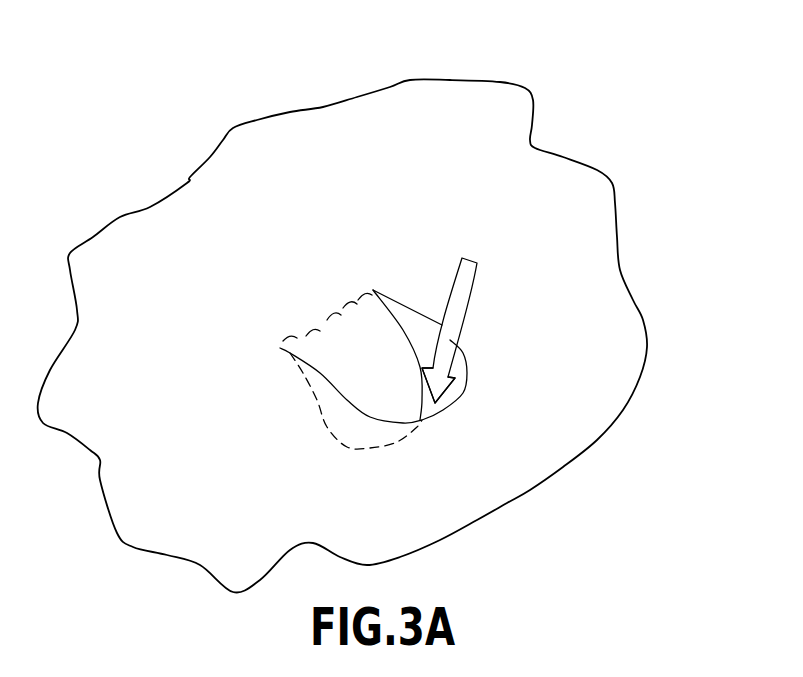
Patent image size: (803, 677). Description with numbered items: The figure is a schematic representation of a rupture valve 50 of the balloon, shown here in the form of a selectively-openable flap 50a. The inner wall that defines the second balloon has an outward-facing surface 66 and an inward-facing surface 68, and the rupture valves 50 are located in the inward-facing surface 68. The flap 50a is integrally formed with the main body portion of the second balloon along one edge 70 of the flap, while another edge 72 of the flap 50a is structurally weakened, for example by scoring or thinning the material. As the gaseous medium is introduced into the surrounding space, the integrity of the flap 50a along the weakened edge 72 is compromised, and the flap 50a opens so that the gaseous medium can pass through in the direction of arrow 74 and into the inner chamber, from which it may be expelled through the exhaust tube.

The rupture valve 50 is at (430, 425).
The flap 50a is at (373, 350).
The outward-facing surface 66 is at (160, 252).
The inward-facing surface 68 is at (200, 497).
The edge of the flap 70 is at (320, 318).
The structurally weakened edge 72 is at (467, 377).
The arrow 74 is at (463, 292).